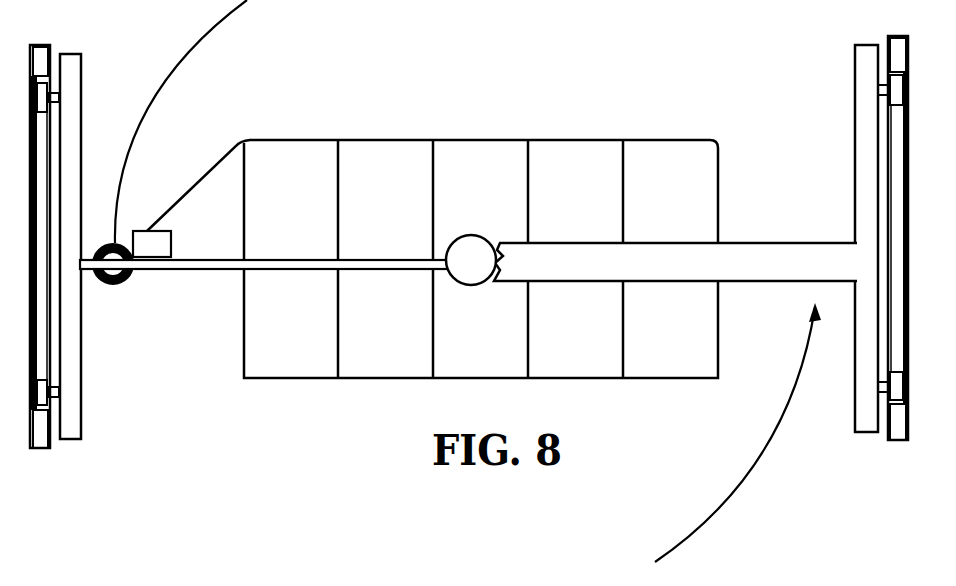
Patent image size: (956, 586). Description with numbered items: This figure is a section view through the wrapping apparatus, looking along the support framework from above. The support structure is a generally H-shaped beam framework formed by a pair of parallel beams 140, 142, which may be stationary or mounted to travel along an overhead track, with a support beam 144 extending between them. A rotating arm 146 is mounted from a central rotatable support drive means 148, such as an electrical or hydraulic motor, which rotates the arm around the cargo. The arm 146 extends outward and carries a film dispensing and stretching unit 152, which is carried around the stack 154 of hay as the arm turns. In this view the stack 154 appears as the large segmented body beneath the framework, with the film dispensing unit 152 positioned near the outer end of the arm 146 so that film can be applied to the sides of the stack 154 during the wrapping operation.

The parallel beam 140 is at (68, 128).
The parallel beam 142 is at (866, 93).
The support beam 144 is at (778, 245).
The rotating arm 146 is at (299, 264).
The central rotatable support drive means 148 is at (478, 246).
The film dispensing and stretching unit 152 is at (158, 263).
The stack 154 is at (530, 140).